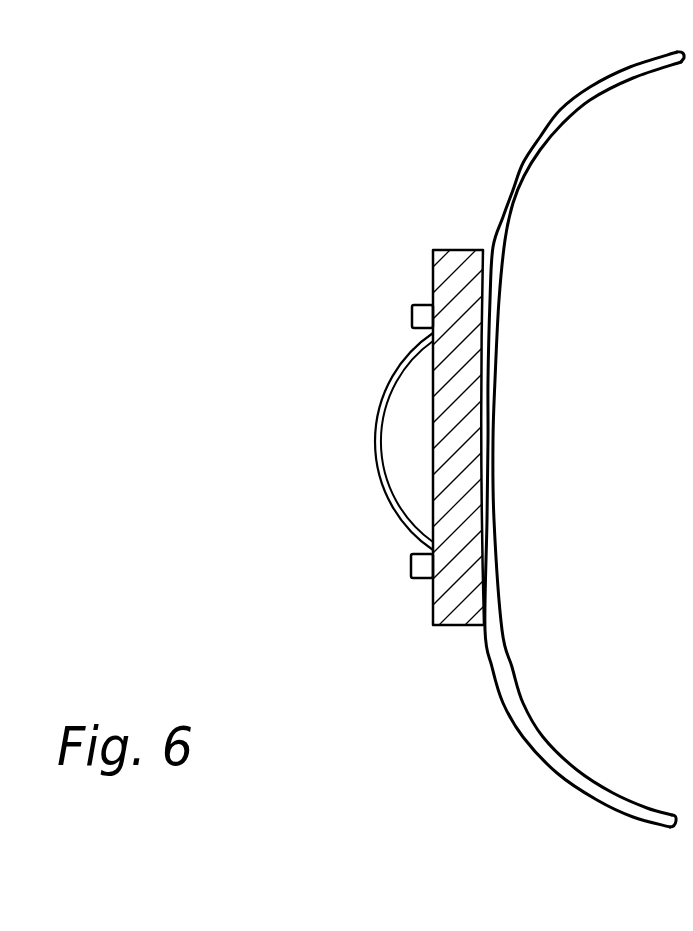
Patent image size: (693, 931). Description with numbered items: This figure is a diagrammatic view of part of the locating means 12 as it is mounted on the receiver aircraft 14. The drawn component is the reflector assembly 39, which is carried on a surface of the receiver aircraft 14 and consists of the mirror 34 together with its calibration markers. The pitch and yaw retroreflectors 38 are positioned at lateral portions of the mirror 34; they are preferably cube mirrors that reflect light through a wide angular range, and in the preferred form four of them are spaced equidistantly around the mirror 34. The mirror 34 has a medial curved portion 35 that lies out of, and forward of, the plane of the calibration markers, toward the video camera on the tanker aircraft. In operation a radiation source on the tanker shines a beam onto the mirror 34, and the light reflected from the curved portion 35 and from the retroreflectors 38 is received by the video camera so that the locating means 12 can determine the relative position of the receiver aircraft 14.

The locating means 12 is at (214, 95).
The receiver aircraft 14 is at (558, 108).
The reflector assembly 39 is at (422, 245).
The pitch and yaw retroreflectors 38 is at (403, 297).
The mirror 34 is at (387, 357).
The curved portion 35 is at (362, 437).